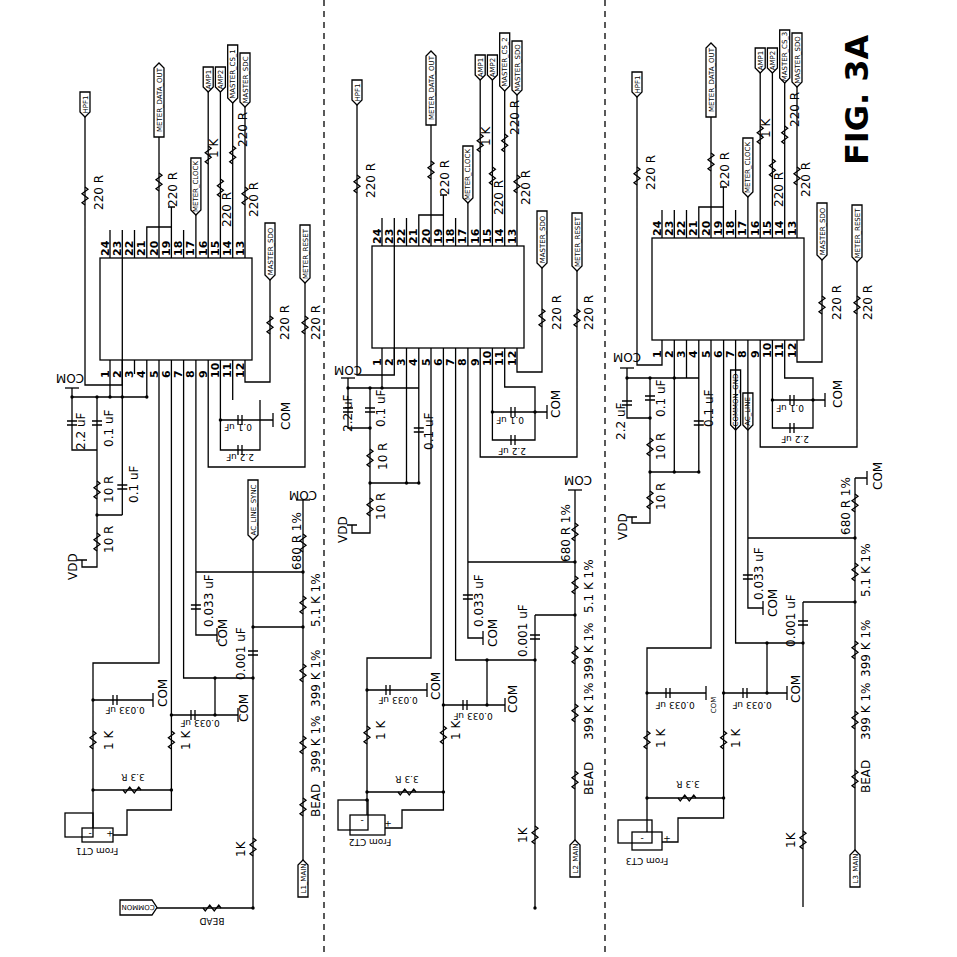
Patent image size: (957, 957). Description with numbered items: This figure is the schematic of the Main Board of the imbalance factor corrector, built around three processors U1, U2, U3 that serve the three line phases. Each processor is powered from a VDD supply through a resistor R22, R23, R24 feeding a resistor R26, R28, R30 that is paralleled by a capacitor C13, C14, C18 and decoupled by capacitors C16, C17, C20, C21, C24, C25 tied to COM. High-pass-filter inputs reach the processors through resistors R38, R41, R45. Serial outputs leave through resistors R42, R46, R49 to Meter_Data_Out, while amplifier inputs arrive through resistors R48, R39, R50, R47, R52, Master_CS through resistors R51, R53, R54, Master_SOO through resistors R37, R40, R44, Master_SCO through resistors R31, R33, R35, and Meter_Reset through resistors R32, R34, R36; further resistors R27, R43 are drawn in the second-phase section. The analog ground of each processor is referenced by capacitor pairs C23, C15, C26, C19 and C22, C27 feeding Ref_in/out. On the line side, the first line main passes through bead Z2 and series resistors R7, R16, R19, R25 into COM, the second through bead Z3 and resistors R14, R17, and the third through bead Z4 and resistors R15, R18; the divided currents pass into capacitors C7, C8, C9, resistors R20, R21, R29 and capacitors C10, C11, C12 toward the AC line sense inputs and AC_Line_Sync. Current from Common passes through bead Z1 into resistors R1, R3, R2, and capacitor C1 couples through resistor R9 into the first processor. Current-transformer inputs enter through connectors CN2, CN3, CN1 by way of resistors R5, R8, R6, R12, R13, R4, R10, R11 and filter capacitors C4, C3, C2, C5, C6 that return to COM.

The processor U1 is at (176, 309).
The processor U2 is at (448, 297).
The processor U3 is at (728, 289).
The resistor R1 is at (261, 847).
The resistor R2 is at (811, 840).
The resistor R3 is at (542, 835).
The resistor R4 is at (687, 805).
The resistor R5 is at (132, 796).
The resistor R6 is at (407, 799).
The resistor R7 is at (297, 744).
The resistor R8 is at (87, 740).
The resistor R9 is at (165, 740).
The resistor R10 is at (641, 740).
The resistor R11 is at (717, 740).
The resistor R12 is at (361, 730).
The resistor R13 is at (437, 730).
The resistor R14 is at (569, 709).
The resistor R15 is at (848, 714).
The resistor R16 is at (297, 671).
The resistor R17 is at (569, 650).
The resistor R18 is at (848, 645).
The resistor R19 is at (297, 600).
The resistor R20 is at (569, 580).
The resistor R21 is at (848, 568).
The resistor R22 is at (91, 541).
The resistor R23 is at (364, 508).
The resistor R24 is at (642, 496).
The resistor R25 is at (311, 539).
The resistor R26 is at (89, 491).
The resistor 680 R 1% R27 is at (584, 536).
The resistor R28 is at (364, 458).
The resistor R29 is at (862, 503).
The resistor R30 is at (643, 445).
The resistor R31 is at (265, 325).
The resistor R32 is at (300, 325).
The resistor R33 is at (537, 314).
The resistor R34 is at (572, 314).
The resistor R35 is at (817, 305).
The resistor R36 is at (852, 305).
The resistor R37 is at (239, 202).
The resistor R38 is at (78, 195).
The resistor R39 is at (215, 198).
The resistor R40 is at (203, 168).
The resistor R41 is at (350, 183).
The resistor R42 is at (153, 178).
The resistor 220 R R43 is at (487, 186).
The resistor R44 is at (791, 182).
The resistor R45 is at (630, 175).
The resistor R46 is at (511, 190).
The resistor R47 is at (767, 178).
The resistor R48 is at (425, 166).
The resistor R49 is at (705, 158).
The resistor R50 is at (475, 156).
The resistor R51 is at (227, 140).
The resistor R52 is at (755, 148).
The resistor R53 is at (499, 128).
The resistor R54 is at (779, 120).
The capacitor C1 is at (193, 708).
The capacitor C2 is at (388, 683).
The capacitor C3 is at (467, 699).
The capacitor C4 is at (114, 693).
The capacitor C5 is at (668, 687).
The capacitor C6 is at (745, 687).
The capacitor C7 is at (266, 652).
The capacitor C8 is at (542, 634).
The capacitor C9 is at (810, 622).
The capacitor C10 is at (191, 596).
The capacitor C11 is at (463, 586).
The capacitor C12 is at (743, 565).
The capacitor C13 is at (116, 474).
The capacitor C14 is at (414, 431).
The capacitor C15 is at (235, 444).
The capacitor C16 is at (68, 405).
The capacitor C17 is at (93, 416).
The capacitor C18 is at (694, 435).
The capacitor C19 is at (508, 434).
The capacitor C20 is at (346, 393).
The capacitor C21 is at (365, 415).
The capacitor C22 is at (790, 423).
The capacitor C23 is at (235, 416).
The capacitor C24 is at (623, 385).
The capacitor C25 is at (645, 391).
The capacitor C26 is at (508, 407).
The capacitor C27 is at (790, 395).
The bead Z1 is at (212, 899).
The bead Z2 is at (297, 806).
The bead Z3 is at (569, 780).
The bead Z4 is at (848, 778).
The connector CN1 is at (640, 835).
The connector CN2 is at (89, 827).
The connector CN3 is at (361, 817).